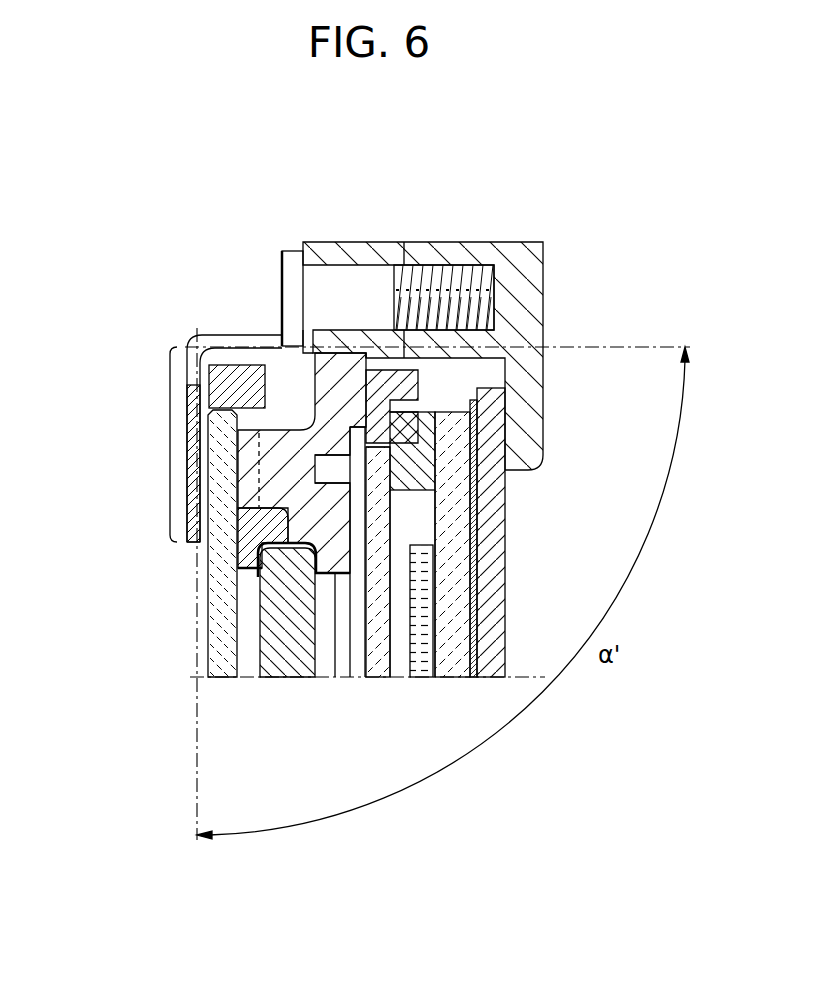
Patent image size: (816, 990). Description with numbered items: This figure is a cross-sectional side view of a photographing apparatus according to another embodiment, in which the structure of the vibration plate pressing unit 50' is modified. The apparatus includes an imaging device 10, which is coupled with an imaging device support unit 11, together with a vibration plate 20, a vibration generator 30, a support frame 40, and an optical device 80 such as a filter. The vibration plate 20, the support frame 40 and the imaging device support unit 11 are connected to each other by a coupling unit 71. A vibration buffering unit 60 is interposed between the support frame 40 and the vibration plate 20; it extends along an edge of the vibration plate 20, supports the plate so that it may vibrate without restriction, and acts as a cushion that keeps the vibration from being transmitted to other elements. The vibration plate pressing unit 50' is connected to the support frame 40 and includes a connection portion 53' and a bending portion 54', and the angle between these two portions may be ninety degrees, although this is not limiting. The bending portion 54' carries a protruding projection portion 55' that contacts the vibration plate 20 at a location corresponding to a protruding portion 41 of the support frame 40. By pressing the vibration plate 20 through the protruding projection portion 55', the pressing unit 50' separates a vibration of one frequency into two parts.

The imaging device 10 is at (505, 690).
The imaging device support unit 11 is at (527, 300).
The vibration plate 20 is at (213, 625).
The vibration generator 30 is at (220, 393).
The support frame 40 is at (241, 378).
The protruding portion 41 is at (250, 478).
The vibration plate pressing unit 50' is at (170, 402).
The connection portion 53' is at (197, 405).
The bending portion 54' is at (124, 435).
The protruding projection portion 55' is at (156, 463).
The vibration buffering unit 60 is at (247, 556).
The coupling unit 71 is at (290, 258).
The optical device 80 is at (288, 668).